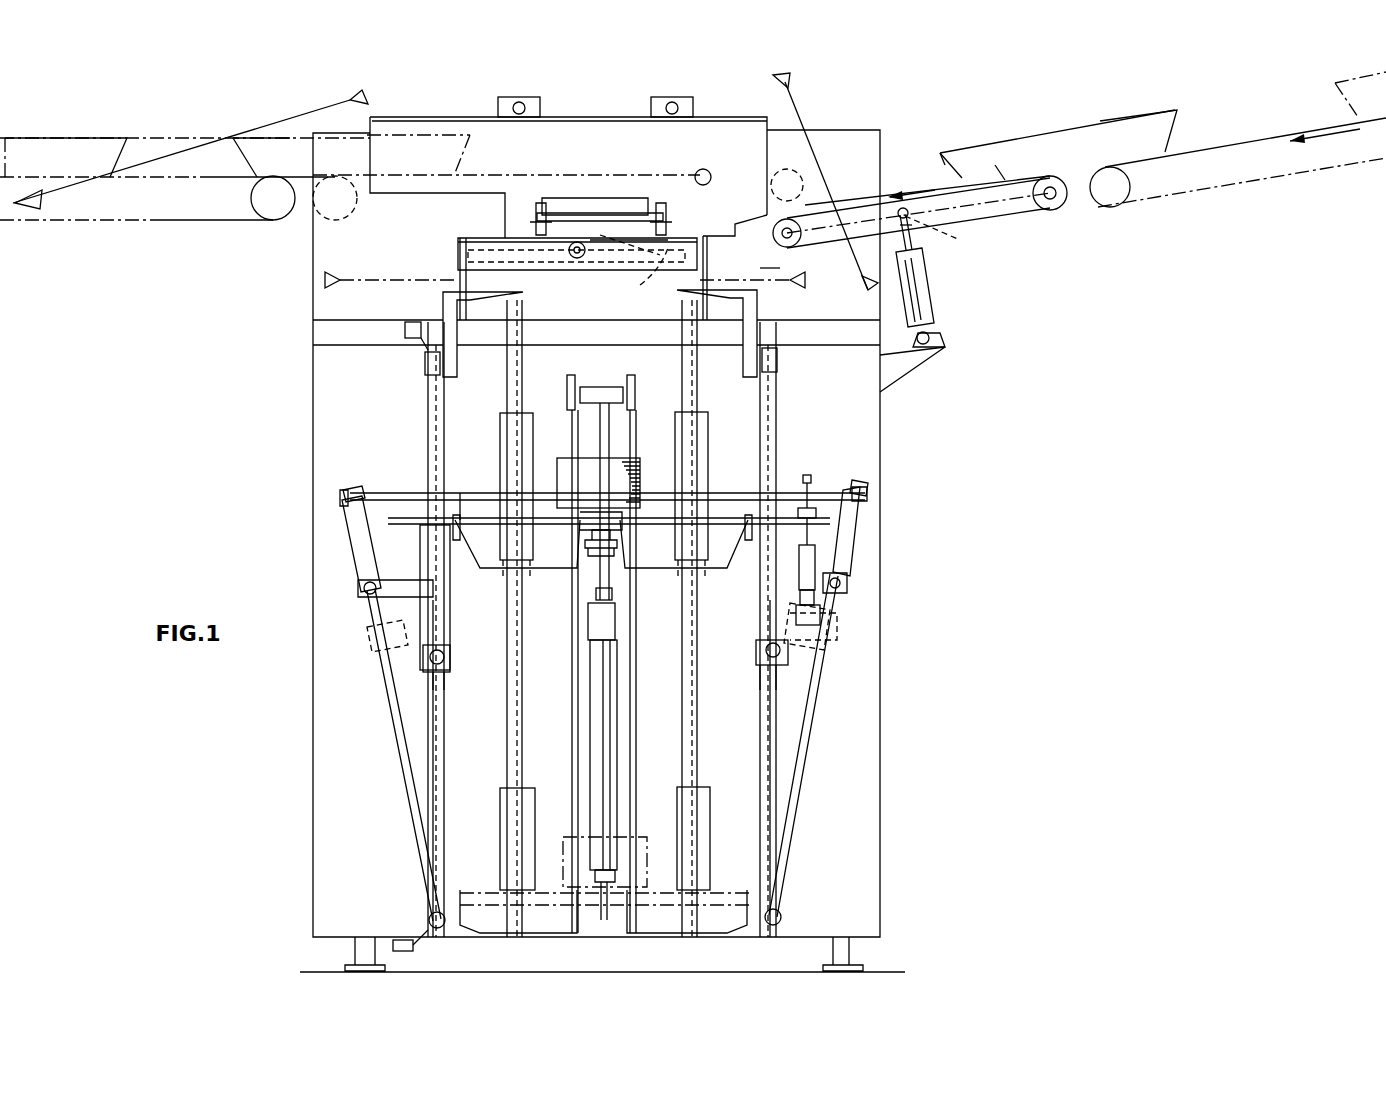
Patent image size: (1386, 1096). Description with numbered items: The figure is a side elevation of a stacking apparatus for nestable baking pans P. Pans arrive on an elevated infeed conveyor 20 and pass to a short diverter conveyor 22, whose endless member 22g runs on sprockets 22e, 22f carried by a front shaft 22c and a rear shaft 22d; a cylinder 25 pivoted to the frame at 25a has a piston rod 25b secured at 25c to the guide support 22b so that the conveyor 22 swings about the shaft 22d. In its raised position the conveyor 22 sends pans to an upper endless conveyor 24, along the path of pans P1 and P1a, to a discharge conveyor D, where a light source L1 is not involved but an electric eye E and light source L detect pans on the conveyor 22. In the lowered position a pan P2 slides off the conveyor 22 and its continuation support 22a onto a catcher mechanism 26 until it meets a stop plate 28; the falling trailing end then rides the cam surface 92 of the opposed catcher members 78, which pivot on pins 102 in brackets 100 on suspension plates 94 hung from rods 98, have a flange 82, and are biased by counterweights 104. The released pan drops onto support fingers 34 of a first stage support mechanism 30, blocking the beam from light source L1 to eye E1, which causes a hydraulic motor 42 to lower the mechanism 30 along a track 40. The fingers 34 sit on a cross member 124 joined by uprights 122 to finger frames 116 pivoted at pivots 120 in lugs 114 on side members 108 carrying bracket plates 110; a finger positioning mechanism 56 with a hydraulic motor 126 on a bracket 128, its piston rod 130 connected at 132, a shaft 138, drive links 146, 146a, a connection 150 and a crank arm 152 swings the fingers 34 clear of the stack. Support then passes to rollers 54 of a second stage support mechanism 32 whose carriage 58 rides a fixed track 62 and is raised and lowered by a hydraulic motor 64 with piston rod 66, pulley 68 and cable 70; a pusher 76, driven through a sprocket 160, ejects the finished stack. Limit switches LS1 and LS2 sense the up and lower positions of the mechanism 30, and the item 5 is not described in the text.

The pivot bracket 5 is at (886, 393).
The infeed conveyor 20 is at (1215, 190).
The diverter conveyor 22 is at (1010, 215).
The continuation support 22a is at (748, 276).
The endless conveyor guide support 22b is at (1000, 190).
The front shaft 22c is at (787, 175).
The rear shaft 22d is at (1056, 188).
The sprocket or sheave 22e is at (775, 240).
The sprocket or sheave 22f is at (1092, 200).
The endless member 22g is at (945, 175).
The upper endless conveyor 24 is at (553, 127).
The fluid pressure operated cylinder 25 is at (936, 300).
The pivotal mounting 25a is at (942, 340).
The piston rod 25b is at (914, 242).
The pivotal connection 25c is at (912, 222).
The catcher mechanism 26 is at (432, 262).
The stop plate 28 is at (458, 265).
The first stage support mechanism 30 is at (426, 399).
The second stage support mechanism 32 is at (716, 498).
The support fingers 34 is at (490, 293).
The track 40 is at (445, 722).
The hydraulic motor 42 is at (590, 620).
The support rollers 54 is at (480, 500).
The finger positioning mechanism 56 is at (850, 542).
The main carriage portion 58 is at (485, 557).
The fixed track 62 is at (508, 760).
The hydraulic motor 64 is at (618, 742).
The piston rod 66 is at (616, 593).
The pulley 68 is at (610, 372).
The cable 70 is at (525, 436).
The pusher 76 is at (640, 468).
The catcher members 78 is at (592, 263).
The outwardly projecting flange 82 is at (492, 238).
The cam surface 92 is at (640, 272).
The suspension plates 94 is at (620, 160).
The rods 98 is at (519, 101).
The brackets 100 is at (618, 206).
The pivot pins 102 is at (538, 214).
The threaded counterweights 104 is at (571, 258).
The side members 108 is at (446, 680).
The bracket plates 110 is at (452, 610).
The lugs 114 is at (452, 662).
The finger frame assemblies 116 is at (428, 435).
The pivots 120 is at (445, 652).
The upright frame members 122 is at (430, 467).
The cross member 124 is at (424, 362).
The hydraulic motor 126 is at (812, 560).
The bracket 128 is at (824, 620).
The piston rod 130 is at (815, 545).
The pivotal connection 132 is at (812, 508).
The shaft 138 is at (455, 490).
The drive link 146 is at (832, 527).
The drive link 146a is at (358, 585).
The pivotal connection 150 is at (845, 585).
The crank arm 152 is at (840, 597).
The end sprocket 160 is at (620, 547).
The discharge conveyor D is at (182, 222).
The electric eye E is at (866, 292).
The electric eye E1 is at (326, 280).
The light source L is at (790, 82).
The light source L1 is at (800, 280).
The limit switch LS1 is at (412, 321).
The limit switch LS2 is at (400, 940).
The baking pans P is at (1114, 118).
The diverted pan P1 is at (98, 150).
The diverted pan P1a is at (275, 138).
The pan being stacked P2 is at (706, 170).